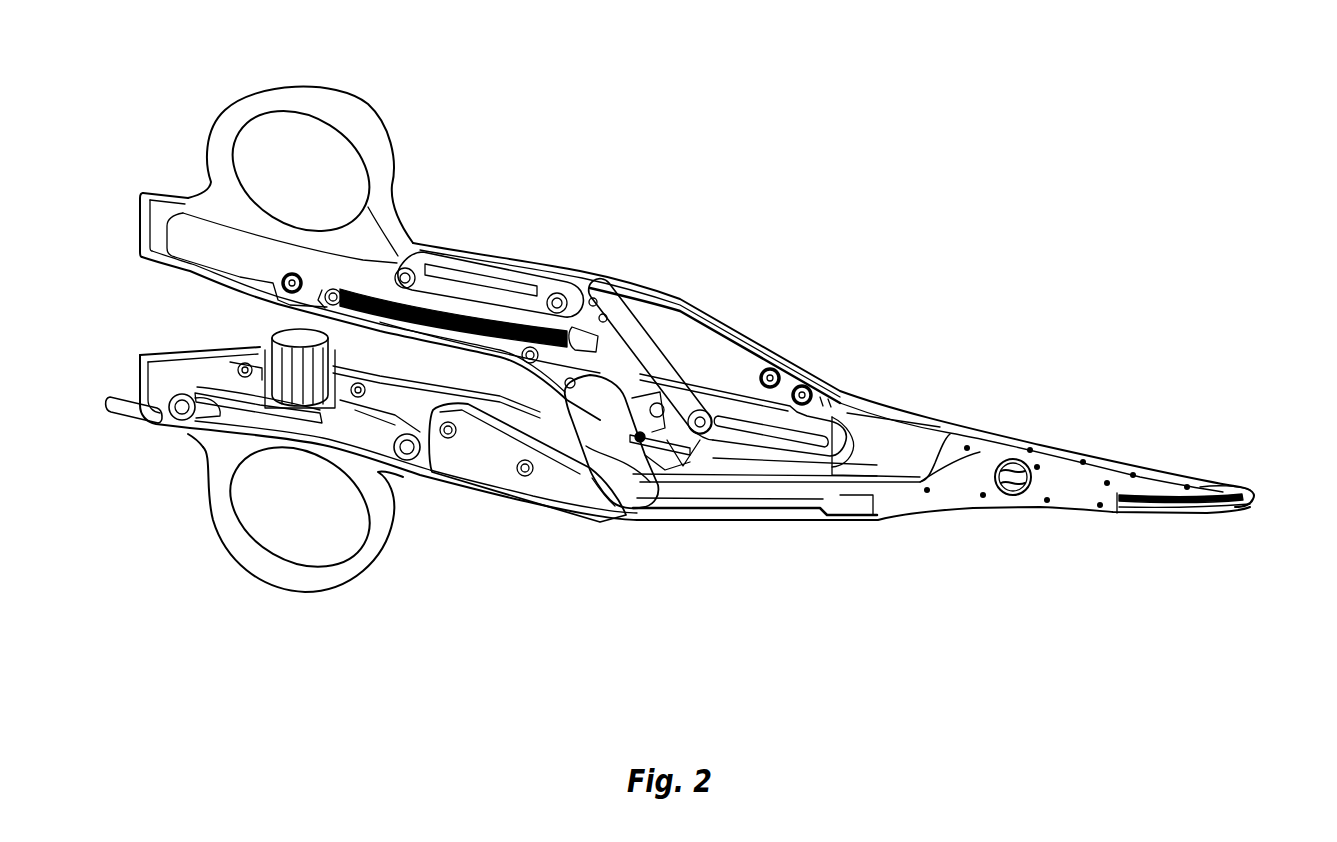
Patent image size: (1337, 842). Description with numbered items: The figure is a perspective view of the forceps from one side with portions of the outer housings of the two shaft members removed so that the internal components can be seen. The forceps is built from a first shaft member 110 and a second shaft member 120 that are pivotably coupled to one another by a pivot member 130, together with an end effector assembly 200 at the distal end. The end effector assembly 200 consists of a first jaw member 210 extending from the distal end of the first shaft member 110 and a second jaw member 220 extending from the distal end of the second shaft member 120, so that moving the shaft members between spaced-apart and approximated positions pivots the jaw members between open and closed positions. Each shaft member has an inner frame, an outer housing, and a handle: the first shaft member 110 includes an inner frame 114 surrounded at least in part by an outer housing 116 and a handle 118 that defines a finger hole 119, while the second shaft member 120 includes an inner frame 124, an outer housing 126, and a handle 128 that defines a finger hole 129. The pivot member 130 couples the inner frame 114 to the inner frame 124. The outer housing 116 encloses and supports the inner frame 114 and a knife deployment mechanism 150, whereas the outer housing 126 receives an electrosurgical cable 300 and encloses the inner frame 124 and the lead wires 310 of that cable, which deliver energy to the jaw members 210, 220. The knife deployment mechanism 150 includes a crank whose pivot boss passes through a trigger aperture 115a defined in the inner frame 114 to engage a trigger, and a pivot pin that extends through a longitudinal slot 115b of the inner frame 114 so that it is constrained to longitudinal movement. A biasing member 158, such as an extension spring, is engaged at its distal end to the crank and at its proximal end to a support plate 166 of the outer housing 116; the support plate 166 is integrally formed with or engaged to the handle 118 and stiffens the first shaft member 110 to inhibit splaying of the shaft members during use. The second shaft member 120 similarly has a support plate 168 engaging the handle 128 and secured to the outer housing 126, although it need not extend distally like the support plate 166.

The first shaft member 110 is at (623, 256).
The inner frame 114 is at (742, 405).
The trigger aperture 115a is at (648, 426).
The longitudinal slot 115b is at (815, 430).
The outer housing 116 is at (713, 330).
The handle 118 is at (330, 110).
The finger hole 119 is at (282, 128).
The second shaft member 120 is at (639, 535).
The inner frame 124 is at (562, 492).
The outer housing 126 is at (755, 512).
The handle 128 is at (268, 572).
The finger hole 129 is at (310, 548).
The pivot member 130 is at (1012, 496).
The knife deployment mechanism 150 is at (666, 352).
The biasing member 158 is at (500, 320).
The support plate 166 is at (447, 265).
The support plate 168 is at (197, 438).
The end effector assembly 200 is at (1260, 460).
The first jaw member 210 is at (1183, 514).
The second jaw member 220 is at (1228, 490).
The electrosurgical cable 300 is at (108, 405).
The lead wires 310 is at (220, 378).